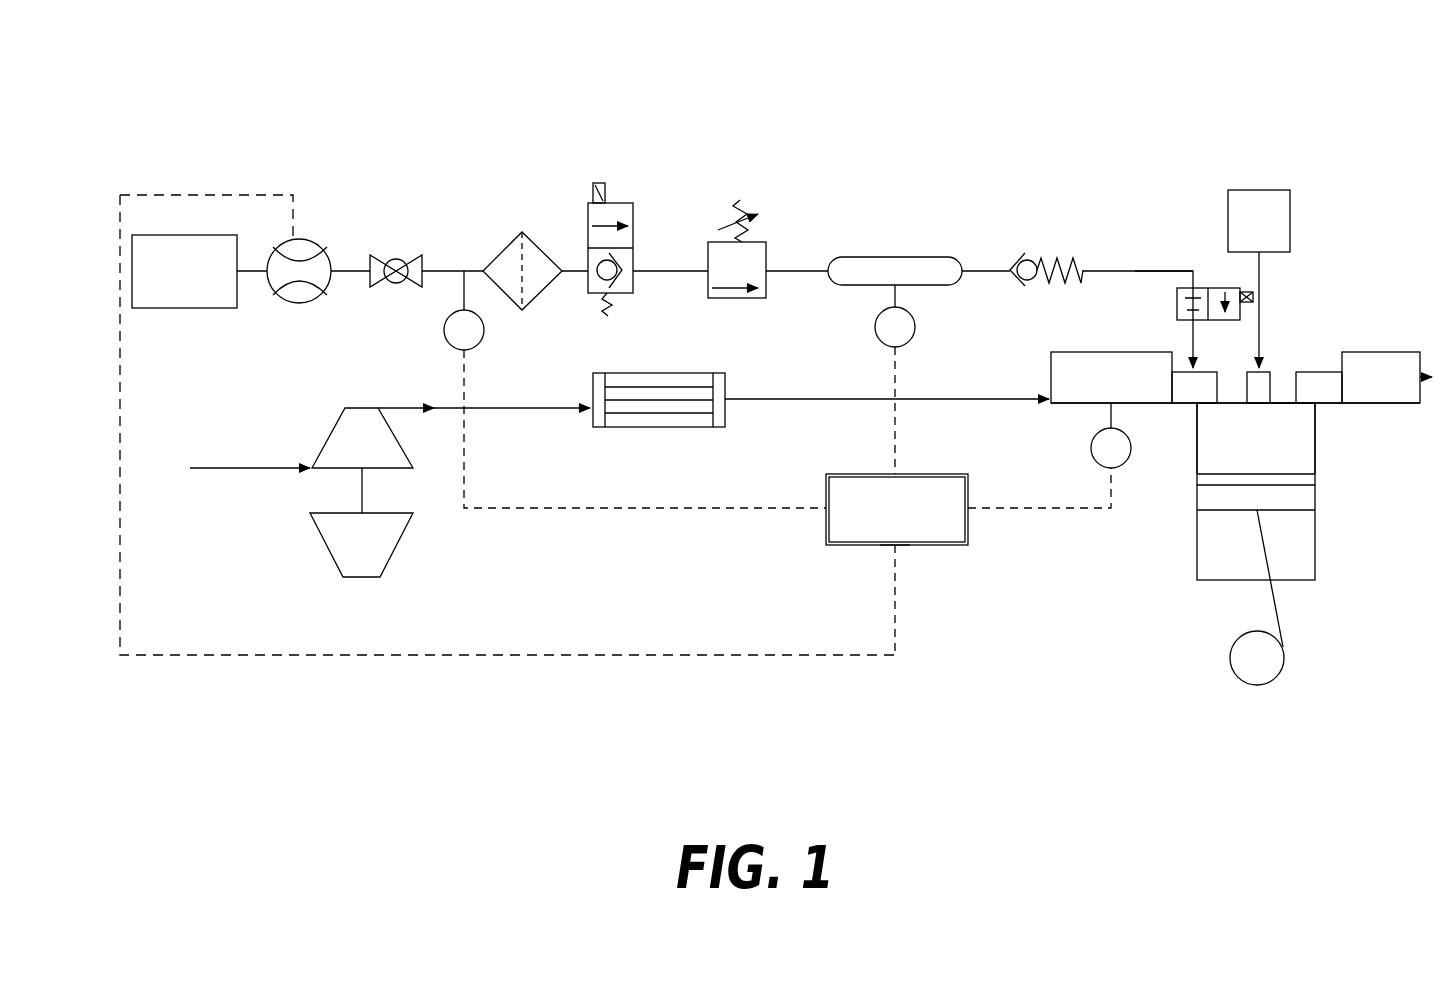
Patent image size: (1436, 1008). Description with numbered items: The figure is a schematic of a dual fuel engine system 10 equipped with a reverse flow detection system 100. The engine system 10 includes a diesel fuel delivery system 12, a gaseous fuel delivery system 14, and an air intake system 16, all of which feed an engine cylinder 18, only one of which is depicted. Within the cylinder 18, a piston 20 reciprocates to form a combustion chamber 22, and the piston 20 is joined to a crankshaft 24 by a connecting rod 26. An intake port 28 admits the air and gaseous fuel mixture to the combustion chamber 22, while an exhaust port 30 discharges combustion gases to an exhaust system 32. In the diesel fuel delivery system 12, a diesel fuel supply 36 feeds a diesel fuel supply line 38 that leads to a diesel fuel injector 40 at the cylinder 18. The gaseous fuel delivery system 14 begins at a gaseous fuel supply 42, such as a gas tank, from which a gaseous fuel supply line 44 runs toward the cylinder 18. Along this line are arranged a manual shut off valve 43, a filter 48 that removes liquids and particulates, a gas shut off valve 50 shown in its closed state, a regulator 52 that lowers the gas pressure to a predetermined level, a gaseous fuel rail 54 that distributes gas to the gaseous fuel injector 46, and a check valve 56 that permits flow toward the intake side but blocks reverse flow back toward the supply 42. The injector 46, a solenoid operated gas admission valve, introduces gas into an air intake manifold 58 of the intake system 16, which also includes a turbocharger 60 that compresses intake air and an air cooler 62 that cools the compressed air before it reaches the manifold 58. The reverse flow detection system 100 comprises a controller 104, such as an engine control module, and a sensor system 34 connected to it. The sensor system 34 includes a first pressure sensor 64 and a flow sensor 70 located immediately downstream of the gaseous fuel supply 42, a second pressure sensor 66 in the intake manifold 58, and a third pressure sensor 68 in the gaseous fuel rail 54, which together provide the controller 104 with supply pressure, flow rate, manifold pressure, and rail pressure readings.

The dual fuel engine system 10 is at (478, 75).
The diesel fuel delivery system 12 is at (1278, 160).
The gaseous fuel delivery system 14 is at (672, 152).
The air intake system 16 is at (312, 437).
The engine cylinder 18 is at (1316, 440).
The piston 20 is at (1308, 497).
The combustion chamber 22 is at (1210, 433).
The crankshaft 24 is at (1272, 672).
The connecting rod 26 is at (1272, 608).
The intake port 28 is at (1205, 365).
The exhaust port 30 is at (1338, 372).
The exhaust system 32 is at (1372, 352).
The sensor system 34 is at (118, 313).
The diesel fuel supply 36 is at (1290, 222).
The diesel fuel supply line 38 is at (1267, 372).
The diesel fuel injector 40 is at (1320, 372).
The gaseous fuel supply 42 is at (160, 235).
The manual shut off valve 43 is at (400, 255).
The gaseous fuel supply line 44 is at (1135, 271).
The gaseous fuel injector 46 is at (1217, 295).
The filter 48 is at (522, 233).
The gas shut off valve 50 is at (606, 203).
The regulator 52 is at (765, 242).
The gaseous fuel rail 54 is at (895, 257).
The check valve 56 is at (1030, 262).
The air intake manifold 58 is at (1110, 352).
The turbocharger 60 is at (330, 472).
The air cooler 62 is at (668, 427).
The first pressure sensor 64 is at (480, 345).
The second pressure sensor 66 is at (1094, 460).
The third pressure sensor 68 is at (910, 340).
The flow sensor 70 is at (300, 239).
The reverse flow detection system 100 is at (828, 565).
The controller 104 is at (880, 545).